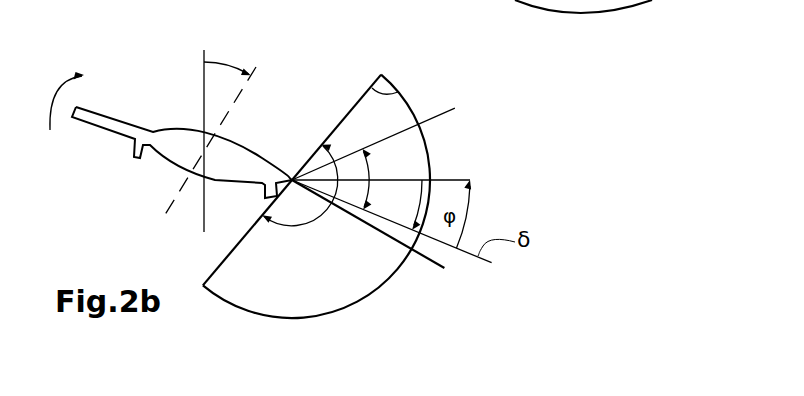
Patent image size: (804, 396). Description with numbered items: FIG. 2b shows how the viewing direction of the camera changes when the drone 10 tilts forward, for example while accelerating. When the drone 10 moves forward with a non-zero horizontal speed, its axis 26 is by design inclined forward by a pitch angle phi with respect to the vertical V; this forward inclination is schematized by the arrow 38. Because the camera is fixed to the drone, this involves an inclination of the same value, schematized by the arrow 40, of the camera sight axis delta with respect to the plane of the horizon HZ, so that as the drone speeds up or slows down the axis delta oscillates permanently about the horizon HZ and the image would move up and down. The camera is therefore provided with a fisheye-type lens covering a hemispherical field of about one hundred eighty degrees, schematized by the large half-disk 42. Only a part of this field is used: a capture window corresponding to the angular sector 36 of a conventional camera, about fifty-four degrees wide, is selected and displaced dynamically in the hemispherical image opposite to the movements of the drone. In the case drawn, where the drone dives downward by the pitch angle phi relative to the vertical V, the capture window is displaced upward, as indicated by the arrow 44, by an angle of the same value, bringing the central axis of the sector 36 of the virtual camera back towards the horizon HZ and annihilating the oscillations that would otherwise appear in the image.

The drone 10 is at (173, 128).
The axis of the drone 26 is at (255, 104).
The angular sector 36 is at (442, 107).
The arrow 38 is at (226, 58).
The arrow 40 is at (418, 201).
The hemispherical field of the fisheye lens 42 is at (397, 92).
The arrow 44 is at (474, 210).
The vertical V is at (202, 72).
The horizon HZ is at (457, 177).